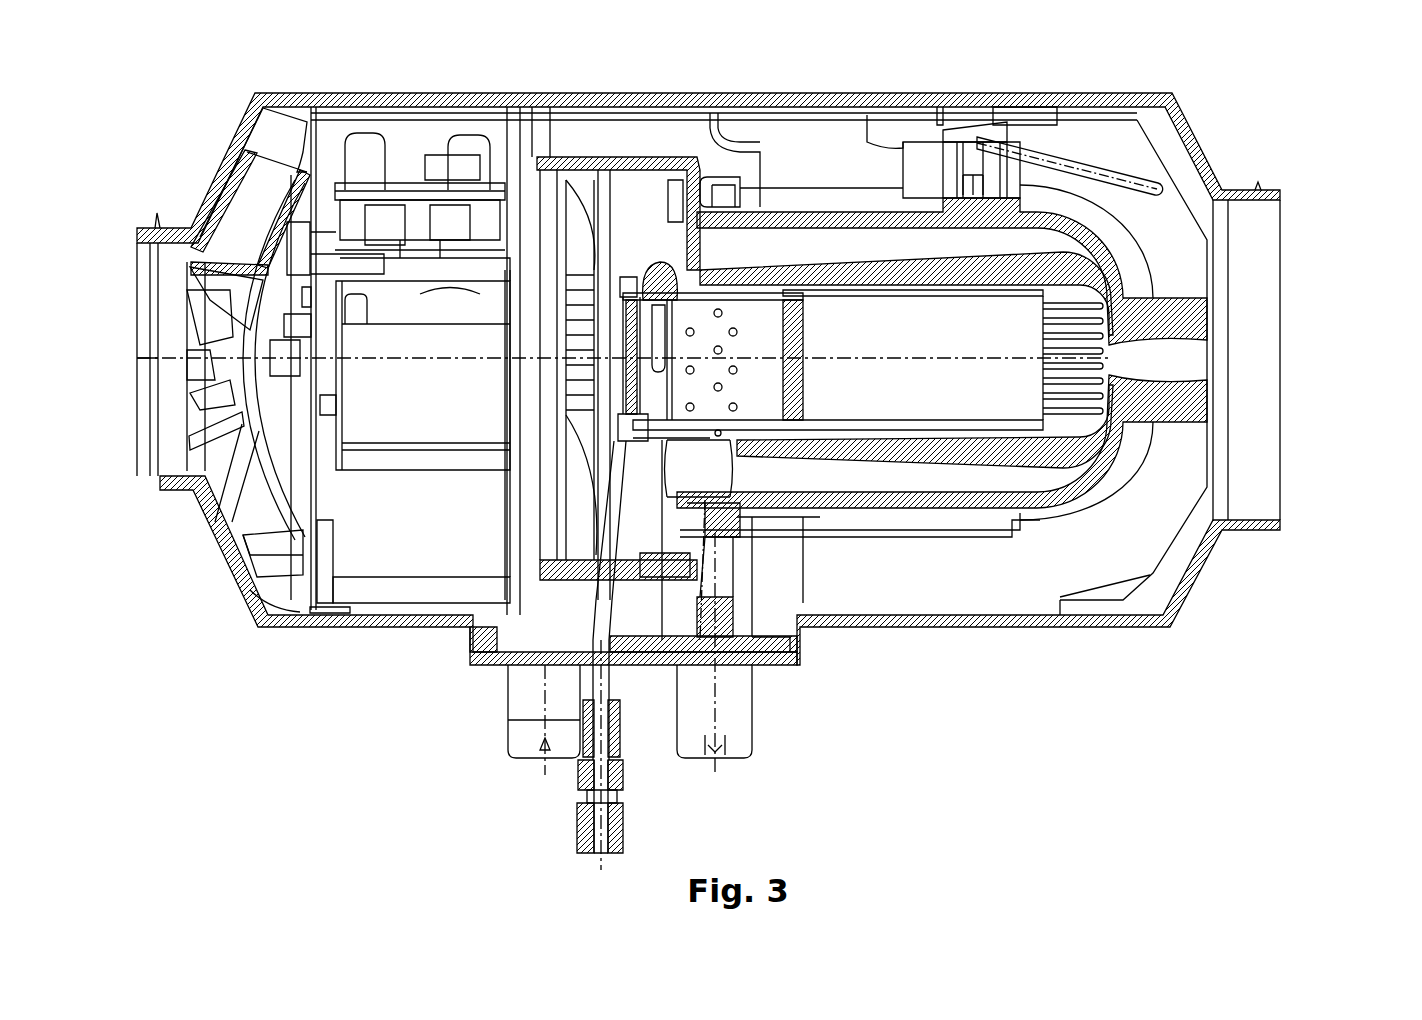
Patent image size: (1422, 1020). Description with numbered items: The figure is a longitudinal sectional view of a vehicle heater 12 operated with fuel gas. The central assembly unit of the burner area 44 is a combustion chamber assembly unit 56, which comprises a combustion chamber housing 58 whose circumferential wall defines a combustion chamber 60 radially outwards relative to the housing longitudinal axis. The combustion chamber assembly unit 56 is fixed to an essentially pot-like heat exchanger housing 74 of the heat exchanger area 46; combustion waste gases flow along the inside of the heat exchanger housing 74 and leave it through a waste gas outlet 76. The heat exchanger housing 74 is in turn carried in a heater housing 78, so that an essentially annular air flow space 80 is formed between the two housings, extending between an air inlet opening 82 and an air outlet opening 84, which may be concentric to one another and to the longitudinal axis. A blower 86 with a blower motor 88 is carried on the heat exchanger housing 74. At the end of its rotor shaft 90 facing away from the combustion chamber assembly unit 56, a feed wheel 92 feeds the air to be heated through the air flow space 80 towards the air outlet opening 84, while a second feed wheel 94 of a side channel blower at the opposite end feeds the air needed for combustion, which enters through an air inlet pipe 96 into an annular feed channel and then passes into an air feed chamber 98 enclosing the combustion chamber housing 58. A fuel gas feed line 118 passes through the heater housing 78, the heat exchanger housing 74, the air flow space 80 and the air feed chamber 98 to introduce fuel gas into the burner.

The vehicle heater 12 is at (1308, 131).
The burner area 44 is at (655, 250).
The heat exchanger area 46 is at (1229, 151).
The combustion chamber assembly unit 56 is at (795, 300).
The combustion chamber housing 58 is at (668, 560).
The combustion chamber 60 is at (700, 320).
The heat exchanger housing 74 is at (830, 515).
The waste gas outlet 76 is at (752, 748).
The heater housing 78 is at (1130, 612).
The air flow space 80 is at (1003, 582).
The air inlet opening 82 is at (170, 432).
The air outlet opening 84 is at (1245, 335).
The blower 86 is at (417, 517).
The blower motor 88 is at (400, 425).
The rotor shaft 90 is at (245, 490).
The feed wheel 92 is at (240, 180).
The feed wheel 94 is at (548, 165).
The air inlet pipe 96 is at (508, 748).
The air feed chamber 98 is at (475, 645).
The fuel gas feed line 118 is at (594, 615).